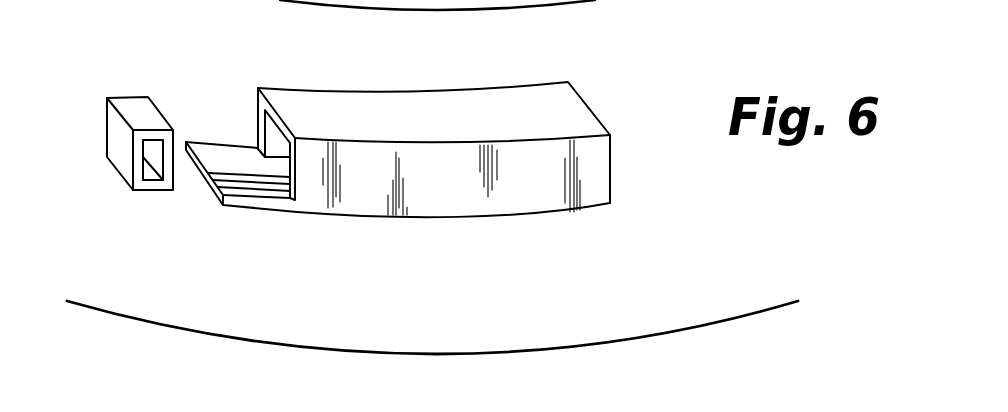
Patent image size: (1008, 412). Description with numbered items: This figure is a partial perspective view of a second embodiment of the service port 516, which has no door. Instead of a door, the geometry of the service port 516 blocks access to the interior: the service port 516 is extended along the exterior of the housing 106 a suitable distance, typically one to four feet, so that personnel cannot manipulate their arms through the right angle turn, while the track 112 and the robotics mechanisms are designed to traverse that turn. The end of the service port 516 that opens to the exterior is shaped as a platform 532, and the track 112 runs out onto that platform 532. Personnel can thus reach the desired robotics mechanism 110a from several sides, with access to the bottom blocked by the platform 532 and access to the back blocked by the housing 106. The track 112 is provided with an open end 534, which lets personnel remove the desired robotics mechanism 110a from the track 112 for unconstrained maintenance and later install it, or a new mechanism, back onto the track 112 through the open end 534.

The housing 106 is at (603, 325).
The desired robotics mechanism 110a is at (134, 108).
The open end 534 is at (209, 171).
The platform 532 is at (305, 228).
The track 112 is at (283, 180).
The service port 516 is at (443, 203).